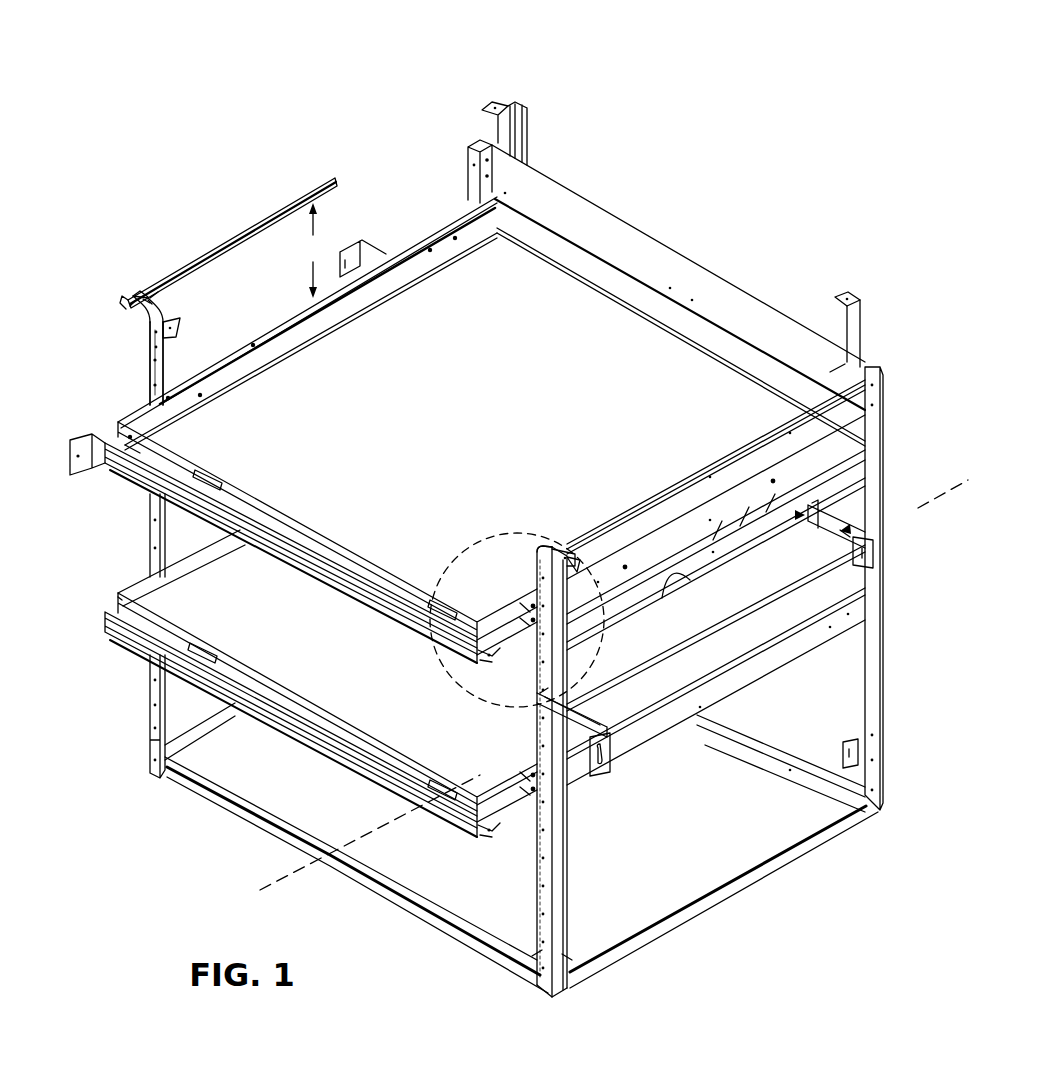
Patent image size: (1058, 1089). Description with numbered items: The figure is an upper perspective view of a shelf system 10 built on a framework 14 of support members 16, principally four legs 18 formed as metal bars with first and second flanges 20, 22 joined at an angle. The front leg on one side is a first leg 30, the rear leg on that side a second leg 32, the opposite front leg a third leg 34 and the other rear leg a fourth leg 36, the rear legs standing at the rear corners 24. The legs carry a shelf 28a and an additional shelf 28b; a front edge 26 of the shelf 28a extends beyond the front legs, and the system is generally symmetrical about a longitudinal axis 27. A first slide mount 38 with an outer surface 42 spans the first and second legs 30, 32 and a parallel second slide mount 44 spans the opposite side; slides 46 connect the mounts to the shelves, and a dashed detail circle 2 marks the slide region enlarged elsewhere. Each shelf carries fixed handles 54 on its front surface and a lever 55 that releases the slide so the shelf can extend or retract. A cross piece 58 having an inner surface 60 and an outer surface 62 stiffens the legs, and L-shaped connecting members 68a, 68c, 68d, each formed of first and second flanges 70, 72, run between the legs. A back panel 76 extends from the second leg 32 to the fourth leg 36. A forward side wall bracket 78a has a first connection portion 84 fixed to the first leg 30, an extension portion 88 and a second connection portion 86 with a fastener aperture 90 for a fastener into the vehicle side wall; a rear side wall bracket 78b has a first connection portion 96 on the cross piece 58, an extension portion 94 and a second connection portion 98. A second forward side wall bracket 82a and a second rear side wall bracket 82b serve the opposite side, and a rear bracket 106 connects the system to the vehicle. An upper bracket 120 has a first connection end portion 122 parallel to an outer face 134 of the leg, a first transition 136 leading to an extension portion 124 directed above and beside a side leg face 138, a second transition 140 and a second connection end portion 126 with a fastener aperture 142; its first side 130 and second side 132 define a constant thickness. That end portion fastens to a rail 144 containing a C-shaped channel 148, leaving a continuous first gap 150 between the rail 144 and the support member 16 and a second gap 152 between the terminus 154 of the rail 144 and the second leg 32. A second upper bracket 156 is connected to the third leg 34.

The detail view circle 2 is at (505, 534).
The shelf system 10 is at (668, 195).
The framework 14 is at (900, 296).
The support members 16 is at (149, 738).
The legs 18 is at (462, 184).
The first flange 20 is at (537, 917).
The second flange 22 is at (563, 898).
The rear corners 24 is at (468, 110).
The front edge 26 is at (287, 517).
The longitudinal axis 27 is at (258, 892).
The shelf 28a is at (485, 590).
The additional shelf 28b is at (257, 639).
The first leg 30 is at (563, 838).
The second leg 32 is at (876, 638).
The third leg 34 is at (150, 383).
The fourth leg 36 is at (470, 158).
The first slide mount 38 is at (871, 445).
The outer surface 42 is at (871, 418).
The second slide mount 44 is at (862, 600).
The slides 46 is at (520, 605).
The fixed handle 54 is at (225, 475).
The lever 55 is at (490, 663).
The cross piece 58 is at (876, 490).
The inner surface 60 is at (680, 575).
The outer surface 62 is at (876, 470).
The connecting member 68a is at (684, 923).
The connecting member 68c is at (256, 826).
The connecting member 68d is at (770, 733).
The first flange 70 is at (805, 750).
The second flange 72 is at (783, 763).
The back panel 76 is at (690, 280).
The forward side wall bracket 78a is at (580, 712).
The rear side wall bracket 78b is at (863, 530).
The second forward side wall bracket 82a is at (113, 487).
The second rear side wall bracket 82b is at (362, 245).
The first connection portion 84 is at (537, 708).
The second connection portion 86 is at (611, 770).
The extension portion 88 is at (590, 720).
The fastener aperture 90 is at (600, 778).
The extension portion 94 is at (874, 552).
The first connection portion 96 is at (773, 555).
The second connection portion 98 is at (872, 563).
The rear bracket 106 is at (497, 100).
The upper bracket 120 is at (140, 322).
The first connection end portion 122 is at (167, 357).
The extension portion 124 is at (180, 325).
The second connection end portion 126 is at (153, 297).
The first side 130 is at (147, 347).
The second side 132 is at (155, 305).
The outer face 134 is at (540, 854).
The first transition 136 is at (243, 364).
The side leg face 138 is at (563, 868).
The second transition 140 is at (125, 300).
The fastener aperture 142 is at (158, 290).
The rail 144 is at (690, 492).
The channel 148 is at (335, 178).
The first gap 150 is at (313, 250).
The second gap 152 is at (775, 419).
The terminus 154 is at (800, 460).
The second upper bracket 156 is at (142, 303).